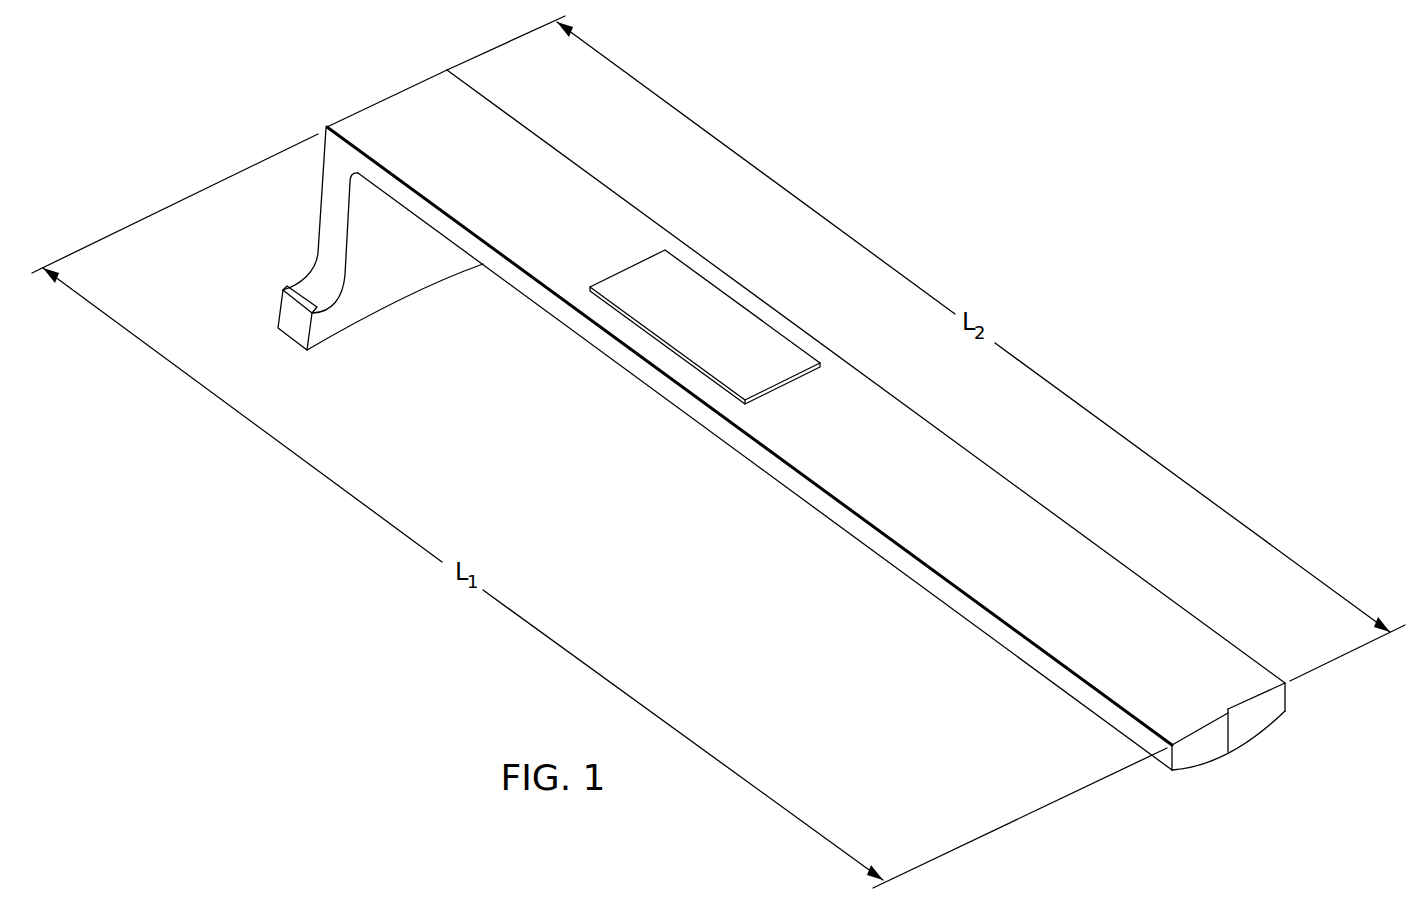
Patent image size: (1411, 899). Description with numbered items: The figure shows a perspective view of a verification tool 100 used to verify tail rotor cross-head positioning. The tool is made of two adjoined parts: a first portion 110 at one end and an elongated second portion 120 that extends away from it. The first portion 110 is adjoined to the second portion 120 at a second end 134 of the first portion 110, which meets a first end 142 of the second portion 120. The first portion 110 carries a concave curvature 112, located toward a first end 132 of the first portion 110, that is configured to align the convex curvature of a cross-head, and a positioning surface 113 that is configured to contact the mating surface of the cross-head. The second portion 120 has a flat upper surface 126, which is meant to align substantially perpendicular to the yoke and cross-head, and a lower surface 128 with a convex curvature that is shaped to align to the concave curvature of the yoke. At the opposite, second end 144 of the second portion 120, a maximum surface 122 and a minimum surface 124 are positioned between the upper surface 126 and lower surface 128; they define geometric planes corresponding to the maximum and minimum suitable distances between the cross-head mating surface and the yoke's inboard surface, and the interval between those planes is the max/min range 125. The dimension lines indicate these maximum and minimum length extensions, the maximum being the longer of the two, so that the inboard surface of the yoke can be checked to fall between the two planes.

The verification tool 100 is at (985, 165).
The first portion 110 is at (400, 295).
The concave curvature 112 is at (352, 323).
The positioning surface 113 is at (316, 229).
The second portion 120 is at (716, 250).
The maximum surface 122 is at (1193, 757).
The minimum surface 124 is at (1277, 700).
The max/min range 125 is at (1232, 737).
The upper surface 126 is at (957, 460).
The lower surface 128 is at (1177, 767).
The first end 132 is at (292, 341).
The second end 134 is at (426, 80).
The first end 142 is at (330, 123).
The second end 144 is at (1260, 690).